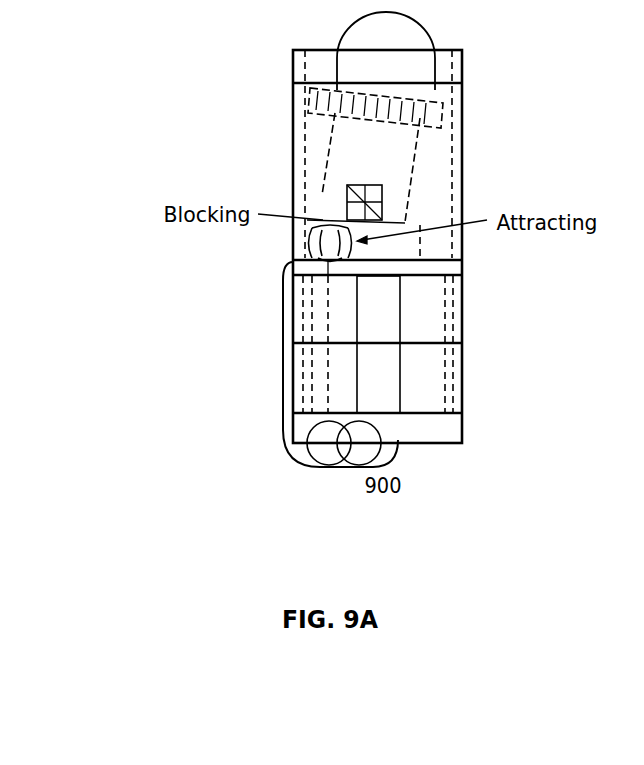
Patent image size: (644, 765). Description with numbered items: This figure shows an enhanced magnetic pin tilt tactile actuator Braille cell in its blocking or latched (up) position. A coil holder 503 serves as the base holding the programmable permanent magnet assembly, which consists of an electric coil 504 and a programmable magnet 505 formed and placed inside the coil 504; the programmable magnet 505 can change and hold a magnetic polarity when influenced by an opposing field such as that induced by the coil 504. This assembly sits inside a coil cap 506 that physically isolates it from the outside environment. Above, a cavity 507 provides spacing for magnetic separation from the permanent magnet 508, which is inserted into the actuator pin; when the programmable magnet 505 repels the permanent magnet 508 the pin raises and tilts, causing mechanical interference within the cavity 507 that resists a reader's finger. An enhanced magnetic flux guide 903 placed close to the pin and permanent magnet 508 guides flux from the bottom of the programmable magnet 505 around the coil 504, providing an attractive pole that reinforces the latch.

The coil holder 503 is at (458, 421).
The electric coil 504 is at (440, 320).
The programmable magnet 505 is at (386, 366).
The coil cap 506 is at (455, 263).
The cavity 507 is at (456, 173).
The permanent magnet 508 is at (337, 195).
The enhanced magnetic flux guide 903 is at (281, 327).